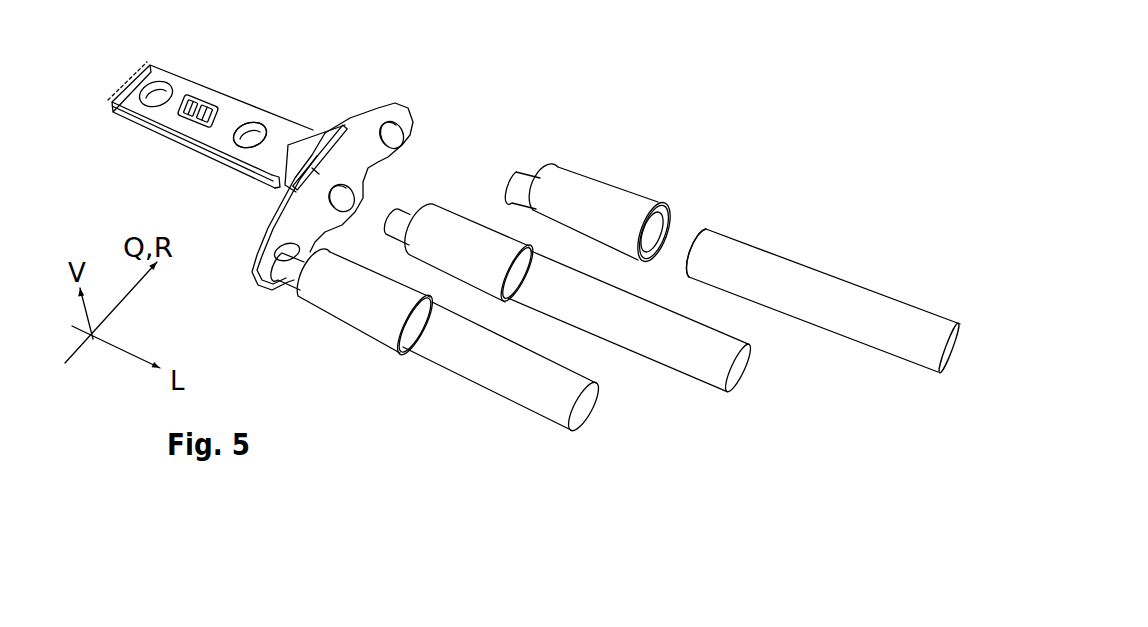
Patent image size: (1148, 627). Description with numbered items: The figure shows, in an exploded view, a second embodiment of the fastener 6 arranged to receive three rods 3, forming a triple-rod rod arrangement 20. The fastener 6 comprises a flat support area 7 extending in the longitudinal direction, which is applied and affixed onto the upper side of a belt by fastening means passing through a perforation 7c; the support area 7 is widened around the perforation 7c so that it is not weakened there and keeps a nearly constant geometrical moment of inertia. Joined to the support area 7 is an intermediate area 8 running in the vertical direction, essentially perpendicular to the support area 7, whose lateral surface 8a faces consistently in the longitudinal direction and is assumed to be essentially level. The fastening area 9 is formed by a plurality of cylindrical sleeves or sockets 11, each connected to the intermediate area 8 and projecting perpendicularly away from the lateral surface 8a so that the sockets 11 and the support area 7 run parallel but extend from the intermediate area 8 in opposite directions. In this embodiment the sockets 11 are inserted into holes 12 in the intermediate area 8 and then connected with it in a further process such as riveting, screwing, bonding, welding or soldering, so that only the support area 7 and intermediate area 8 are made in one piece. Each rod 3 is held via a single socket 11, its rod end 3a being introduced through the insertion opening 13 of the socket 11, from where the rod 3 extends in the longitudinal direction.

The rod arrangement 20 is at (578, 97).
The fastener 6 is at (157, 134).
The support area 7 is at (234, 112).
The perforation 7c is at (157, 99).
The intermediate area 8 is at (363, 120).
The lateral surface 8a is at (303, 223).
The holes 12 is at (347, 198).
The fastening area 9 is at (321, 340).
The socket 11 is at (365, 283).
The insertion opening 13 is at (648, 238).
The rod 3 is at (780, 382).
The rod end 3a is at (700, 227).